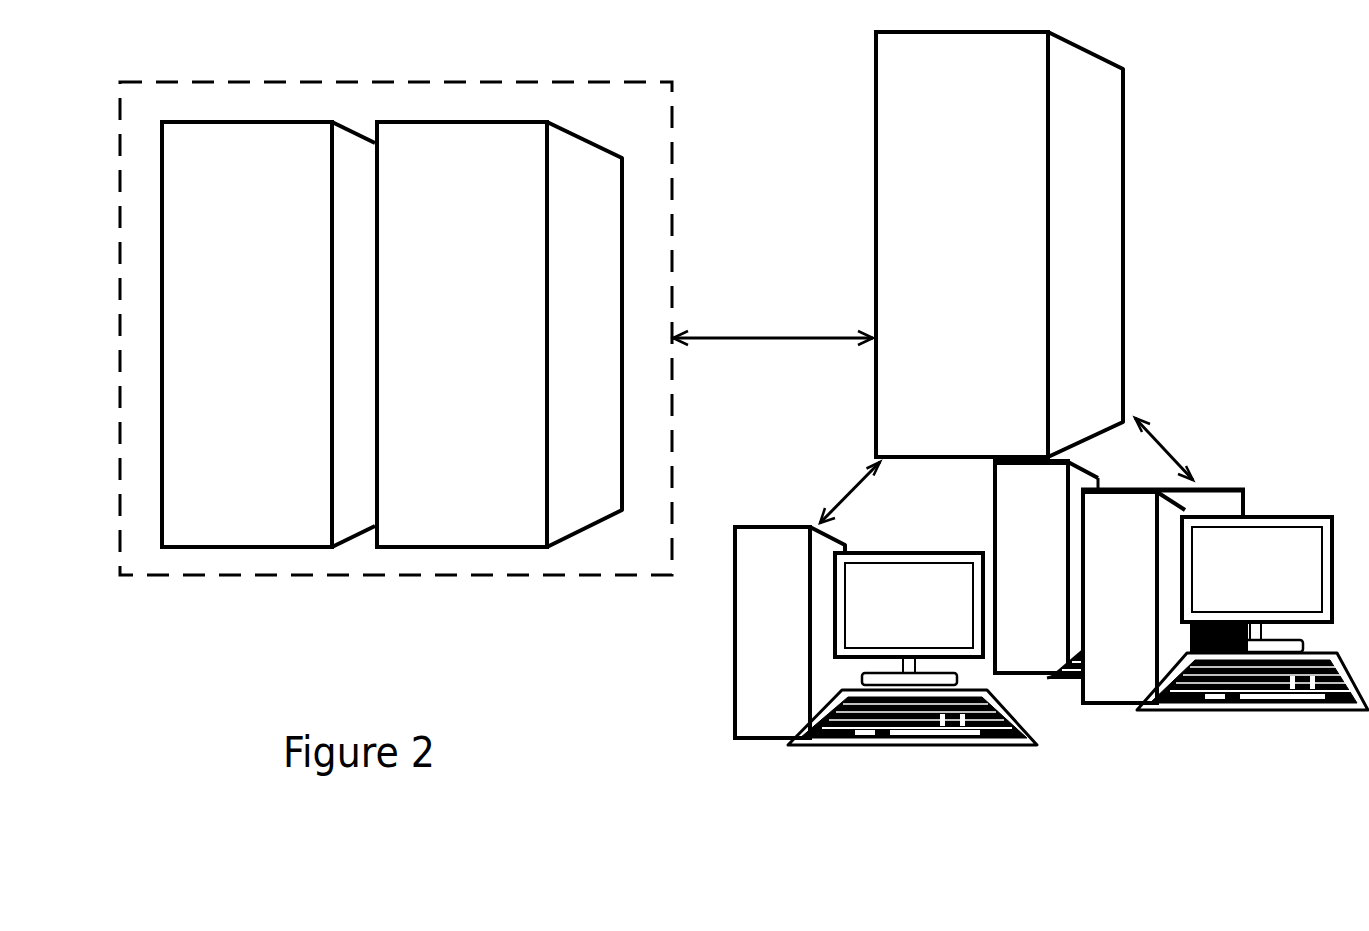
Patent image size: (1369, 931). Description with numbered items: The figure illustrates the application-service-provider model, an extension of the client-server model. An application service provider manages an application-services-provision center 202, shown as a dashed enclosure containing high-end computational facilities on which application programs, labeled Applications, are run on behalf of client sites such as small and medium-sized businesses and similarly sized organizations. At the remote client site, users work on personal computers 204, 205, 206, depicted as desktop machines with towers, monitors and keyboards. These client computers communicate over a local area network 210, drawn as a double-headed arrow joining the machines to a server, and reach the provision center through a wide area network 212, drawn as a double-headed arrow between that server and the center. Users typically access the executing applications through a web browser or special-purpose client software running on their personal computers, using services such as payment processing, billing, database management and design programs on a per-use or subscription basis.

The application-services-provision center 202 is at (382, 84).
The personal computer 204 is at (887, 742).
The personal computer 205 is at (1262, 710).
The personal computer 206 is at (993, 505).
The local area network 210 is at (847, 492).
The wide area network 212 is at (783, 336).